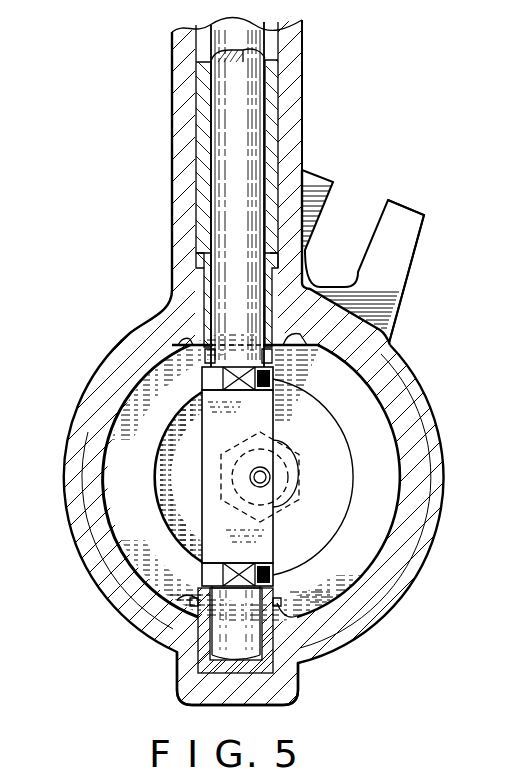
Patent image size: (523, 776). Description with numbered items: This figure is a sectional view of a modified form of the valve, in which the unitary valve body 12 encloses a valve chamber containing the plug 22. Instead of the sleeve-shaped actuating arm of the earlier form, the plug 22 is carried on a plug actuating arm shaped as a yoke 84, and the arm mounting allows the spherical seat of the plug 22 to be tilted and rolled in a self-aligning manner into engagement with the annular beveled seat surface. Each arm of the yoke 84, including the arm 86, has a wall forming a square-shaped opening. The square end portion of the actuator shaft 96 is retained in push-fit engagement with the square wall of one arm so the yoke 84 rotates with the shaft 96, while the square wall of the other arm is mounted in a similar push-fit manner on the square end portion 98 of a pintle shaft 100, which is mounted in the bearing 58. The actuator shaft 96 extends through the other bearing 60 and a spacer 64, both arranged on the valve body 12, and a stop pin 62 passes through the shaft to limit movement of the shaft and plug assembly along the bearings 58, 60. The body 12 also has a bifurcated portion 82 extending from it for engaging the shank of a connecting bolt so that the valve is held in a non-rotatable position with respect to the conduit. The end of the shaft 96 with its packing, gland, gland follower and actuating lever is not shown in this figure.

The valve body 12 is at (400, 344).
The plug 22 is at (182, 480).
The bearing 58 is at (283, 657).
The bearing 60 is at (204, 283).
The stop pin 62 is at (185, 308).
The spacer 64 is at (278, 103).
The bifurcated portion 82 is at (402, 238).
The yoke 84 is at (212, 463).
The arm of the yoke 86 is at (203, 381).
The actuator shaft 96 is at (242, 153).
The square end portion 98 is at (273, 576).
The pintle shaft 100 is at (278, 675).